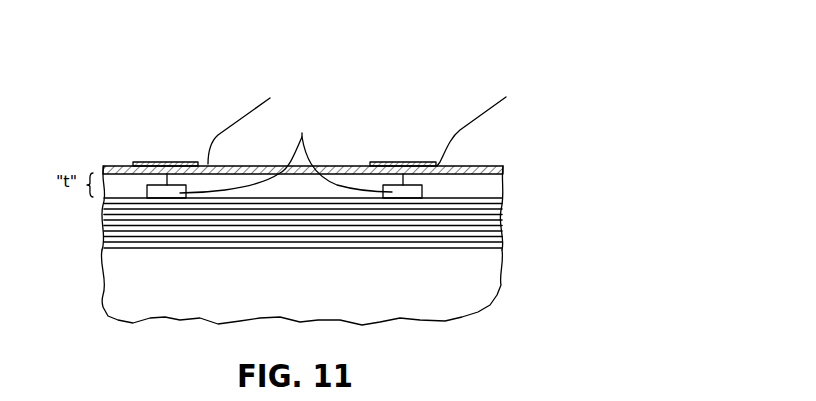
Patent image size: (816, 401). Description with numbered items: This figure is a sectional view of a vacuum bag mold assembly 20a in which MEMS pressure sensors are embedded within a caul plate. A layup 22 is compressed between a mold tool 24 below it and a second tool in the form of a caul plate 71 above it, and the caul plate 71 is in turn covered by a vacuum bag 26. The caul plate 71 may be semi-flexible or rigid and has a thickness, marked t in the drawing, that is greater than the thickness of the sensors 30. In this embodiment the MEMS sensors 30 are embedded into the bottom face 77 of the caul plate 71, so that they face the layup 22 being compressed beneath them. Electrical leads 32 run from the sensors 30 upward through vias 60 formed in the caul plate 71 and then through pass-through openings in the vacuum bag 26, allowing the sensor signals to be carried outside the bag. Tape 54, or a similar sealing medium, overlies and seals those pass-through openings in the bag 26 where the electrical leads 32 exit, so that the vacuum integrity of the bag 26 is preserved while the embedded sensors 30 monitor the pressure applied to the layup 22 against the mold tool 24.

The vacuum bag mold assembly 20a is at (577, 92).
The layup 22 is at (497, 223).
The mold tool 24 is at (458, 283).
The vacuum bag 26 is at (117, 156).
The MEMS sensors 30 is at (286, 152).
The electrical leads 32 is at (252, 102).
The tape 54 is at (163, 162).
The vias 60 is at (151, 175).
The caul plate 71 is at (490, 185).
The bottom face 77 is at (124, 214).